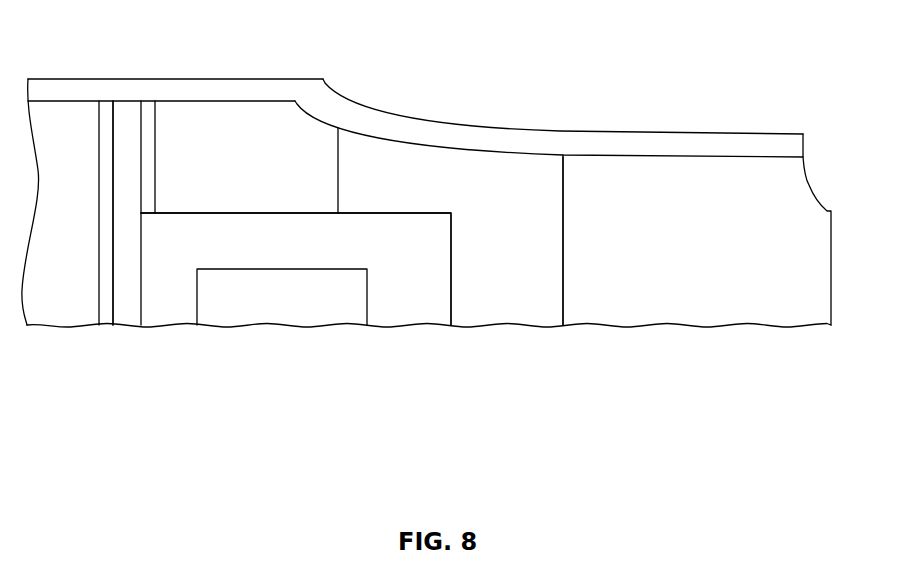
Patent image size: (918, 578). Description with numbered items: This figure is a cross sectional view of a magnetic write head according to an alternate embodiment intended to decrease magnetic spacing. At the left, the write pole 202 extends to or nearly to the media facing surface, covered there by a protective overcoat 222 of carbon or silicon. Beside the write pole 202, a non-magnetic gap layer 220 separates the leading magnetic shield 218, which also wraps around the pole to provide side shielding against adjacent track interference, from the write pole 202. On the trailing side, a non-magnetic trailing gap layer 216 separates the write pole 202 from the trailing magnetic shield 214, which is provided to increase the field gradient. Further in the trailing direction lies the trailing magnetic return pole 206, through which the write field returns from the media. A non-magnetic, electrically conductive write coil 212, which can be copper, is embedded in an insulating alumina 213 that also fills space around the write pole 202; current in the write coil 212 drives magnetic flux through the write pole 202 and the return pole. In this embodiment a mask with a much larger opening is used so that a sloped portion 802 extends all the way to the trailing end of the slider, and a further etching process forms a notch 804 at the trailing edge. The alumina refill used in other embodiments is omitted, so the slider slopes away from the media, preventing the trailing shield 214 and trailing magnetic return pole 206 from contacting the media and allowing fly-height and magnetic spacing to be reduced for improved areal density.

The write pole 202 is at (125, 132).
The trailing magnetic return pole 206 is at (499, 179).
The write coil 212 is at (309, 292).
The alumina 213 is at (318, 239).
The trailing magnetic shield 214 is at (258, 150).
The non-magnetic trailing gap layer 216 is at (147, 189).
The leading magnetic shield 218 is at (88, 285).
The non-magnetic gap layer 220 is at (105, 174).
The protective overcoat 222 is at (180, 86).
The sloped portion 802 is at (392, 136).
The notch 804 is at (805, 190).